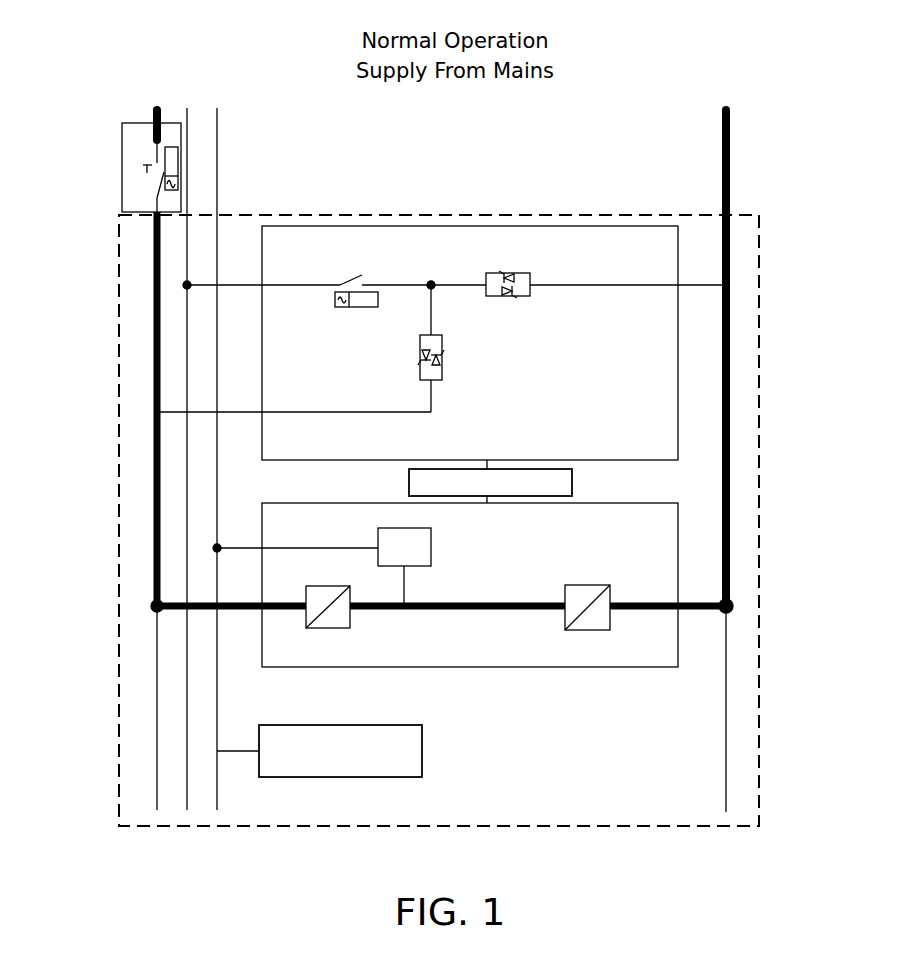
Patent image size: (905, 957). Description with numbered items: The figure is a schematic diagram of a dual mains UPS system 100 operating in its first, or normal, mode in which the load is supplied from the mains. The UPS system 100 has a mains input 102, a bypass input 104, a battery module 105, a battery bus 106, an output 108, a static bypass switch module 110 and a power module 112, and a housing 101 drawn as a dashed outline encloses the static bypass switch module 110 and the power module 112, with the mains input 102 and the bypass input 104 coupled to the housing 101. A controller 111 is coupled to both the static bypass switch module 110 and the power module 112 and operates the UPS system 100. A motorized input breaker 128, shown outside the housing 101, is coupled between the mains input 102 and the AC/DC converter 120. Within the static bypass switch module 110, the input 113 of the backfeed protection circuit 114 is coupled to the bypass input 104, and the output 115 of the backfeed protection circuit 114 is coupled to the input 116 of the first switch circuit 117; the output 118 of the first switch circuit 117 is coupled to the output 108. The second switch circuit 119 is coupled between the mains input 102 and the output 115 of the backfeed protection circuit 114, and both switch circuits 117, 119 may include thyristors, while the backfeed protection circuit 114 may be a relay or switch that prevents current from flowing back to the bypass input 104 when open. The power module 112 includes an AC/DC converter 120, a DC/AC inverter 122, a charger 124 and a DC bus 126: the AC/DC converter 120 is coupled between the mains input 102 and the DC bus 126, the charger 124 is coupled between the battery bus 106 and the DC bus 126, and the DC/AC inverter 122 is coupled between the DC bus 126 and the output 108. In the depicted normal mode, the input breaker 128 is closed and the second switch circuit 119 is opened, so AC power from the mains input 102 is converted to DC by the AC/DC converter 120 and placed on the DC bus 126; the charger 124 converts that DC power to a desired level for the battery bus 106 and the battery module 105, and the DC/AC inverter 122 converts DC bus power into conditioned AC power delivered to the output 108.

The dual mains UPS system 100 is at (748, 98).
The housing 101 is at (760, 725).
The mains input 102 is at (152, 124).
The bypass input 104 is at (187, 172).
The battery module 105 is at (422, 755).
The battery bus 106 is at (217, 170).
The output 108 is at (730, 296).
The static bypass switch module 110 is at (470, 343).
The controller 111 is at (410, 478).
The power module 112 is at (470, 585).
The input of the backfeed protection circuit 113 is at (340, 285).
The backfeed protection circuit 114 is at (350, 281).
The output of the backfeed protection circuit 115 is at (372, 284).
The input of the first switch circuit 116 is at (480, 283).
The first switch circuit 117 is at (512, 298).
The output of the first switch circuit 118 is at (536, 284).
The second switch circuit 119 is at (420, 352).
The AC/DC converter 120 is at (352, 620).
The DC/AC inverter 122 is at (565, 590).
The charger 124 is at (431, 540).
The DC bus 126 is at (467, 610).
The motorized input breaker 128 is at (122, 186).